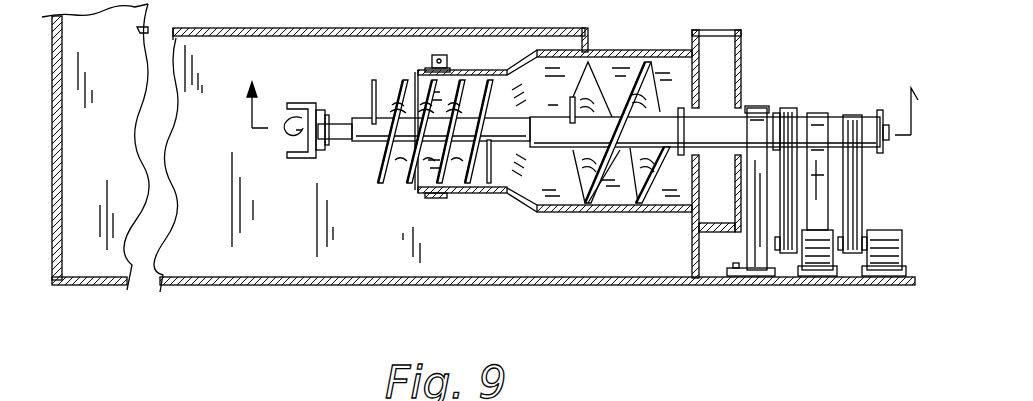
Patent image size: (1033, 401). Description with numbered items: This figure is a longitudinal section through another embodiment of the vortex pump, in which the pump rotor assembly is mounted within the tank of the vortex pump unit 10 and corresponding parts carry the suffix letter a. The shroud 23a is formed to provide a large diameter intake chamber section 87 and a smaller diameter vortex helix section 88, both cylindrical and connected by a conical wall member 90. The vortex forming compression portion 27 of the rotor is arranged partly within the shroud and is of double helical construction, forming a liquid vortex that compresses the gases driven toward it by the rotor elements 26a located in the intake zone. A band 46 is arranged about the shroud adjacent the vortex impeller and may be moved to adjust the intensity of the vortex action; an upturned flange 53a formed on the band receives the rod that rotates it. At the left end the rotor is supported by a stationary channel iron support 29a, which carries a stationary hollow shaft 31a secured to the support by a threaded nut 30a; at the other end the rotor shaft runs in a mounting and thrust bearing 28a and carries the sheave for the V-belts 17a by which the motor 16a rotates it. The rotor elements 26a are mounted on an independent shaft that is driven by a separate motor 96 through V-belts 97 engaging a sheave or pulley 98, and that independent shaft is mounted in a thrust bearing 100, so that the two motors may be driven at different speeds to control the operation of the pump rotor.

The vortex pump unit 10 is at (581, 98).
The stationary hollow shaft 31a is at (337, 122).
The vortex forming compression portion 27 is at (400, 84).
The upturned flange 53a is at (448, 62).
The channel iron support 29a is at (300, 160).
The threaded nut 30a is at (322, 158).
The vortex helix section 88 is at (480, 195).
The band 46 is at (430, 200).
The conical wall member 90 is at (530, 205).
The rotor elements 26a is at (655, 62).
The shroud 23a is at (600, 213).
The intake chamber section 87 is at (672, 213).
The thrust bearing 100 is at (752, 108).
The sheave or pulley 98 is at (787, 108).
The mounting and thrust bearing 28a is at (812, 113).
The V-belts 17a is at (855, 205).
The V-belts 97 is at (785, 215).
The separate motor 96 is at (818, 250).
The motor 16a is at (885, 250).